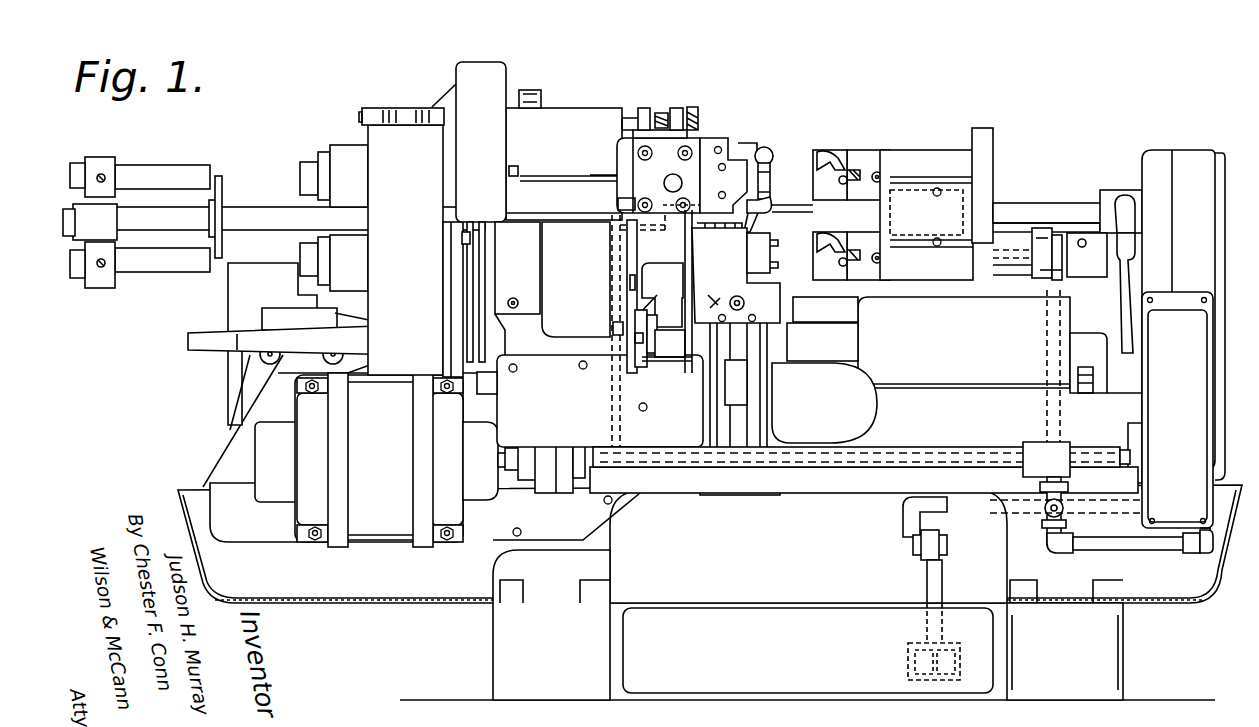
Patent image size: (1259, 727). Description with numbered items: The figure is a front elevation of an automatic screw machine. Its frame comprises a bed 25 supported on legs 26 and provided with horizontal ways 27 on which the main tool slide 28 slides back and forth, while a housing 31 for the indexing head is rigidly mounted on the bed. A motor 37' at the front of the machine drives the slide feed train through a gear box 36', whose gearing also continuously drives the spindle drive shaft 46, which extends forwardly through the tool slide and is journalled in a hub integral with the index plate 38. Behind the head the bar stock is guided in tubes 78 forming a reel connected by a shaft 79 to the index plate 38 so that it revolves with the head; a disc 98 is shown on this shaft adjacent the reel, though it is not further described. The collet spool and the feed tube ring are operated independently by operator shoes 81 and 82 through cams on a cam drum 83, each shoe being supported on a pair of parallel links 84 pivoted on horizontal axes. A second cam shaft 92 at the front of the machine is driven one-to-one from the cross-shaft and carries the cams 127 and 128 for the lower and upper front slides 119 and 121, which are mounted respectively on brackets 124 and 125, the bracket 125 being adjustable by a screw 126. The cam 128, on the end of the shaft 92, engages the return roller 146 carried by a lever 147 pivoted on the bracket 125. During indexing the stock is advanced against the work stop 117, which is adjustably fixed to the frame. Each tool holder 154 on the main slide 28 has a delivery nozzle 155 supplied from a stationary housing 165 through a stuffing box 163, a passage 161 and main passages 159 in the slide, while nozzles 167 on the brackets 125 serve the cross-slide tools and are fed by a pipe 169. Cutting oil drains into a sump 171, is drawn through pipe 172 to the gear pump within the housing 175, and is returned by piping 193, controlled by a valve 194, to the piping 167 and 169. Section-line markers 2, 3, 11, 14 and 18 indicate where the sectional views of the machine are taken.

The section line 2- 2 is at (409, 57).
The section line 3- 3 is at (266, 55).
The section line 11- 11 is at (1198, 343).
The section line 14- 14 is at (814, 87).
The section line 18- 18 is at (672, 55).
The bed 25 is at (828, 495).
The legs 26 is at (600, 560).
The horizontal ways 27 is at (848, 306).
The main tool slide 28 is at (930, 160).
The housing 31 is at (563, 115).
The gear box 36' is at (1147, 301).
The motor 37' is at (397, 473).
The index plate 38 is at (483, 250).
The spindle drive shaft 46 is at (1012, 205).
The tube 78 is at (156, 177).
The shaft 79 is at (250, 211).
The operator shoe 81 is at (401, 292).
The operator shoe 82 is at (312, 318).
The cam drum 83 is at (228, 298).
The parallel links 84 is at (255, 390).
The second cam shaft 92 is at (860, 352).
The collar disc 98 is at (224, 182).
The work stop 117 is at (772, 268).
The lower front cross-slide 119 is at (723, 300).
The upper front cross-slide 121 is at (735, 160).
The bracket 124 is at (765, 366).
The bracket 125 is at (703, 137).
The screw 126 is at (666, 118).
The cam 127 is at (740, 338).
The cam 128 is at (650, 336).
The return roller 146 is at (662, 358).
The lever 147 is at (655, 347).
The tool holder 154 is at (876, 158).
The delivery nozzle 155 is at (828, 152).
The main passages 159 is at (920, 252).
The passage 161 is at (1020, 248).
The stuffing box 163 is at (1062, 230).
The stationary housing 165 is at (1094, 317).
The nozzles 167 is at (767, 148).
The pipe 169 is at (594, 485).
The sump 171 is at (822, 640).
The pipe 172 is at (956, 508).
The housing 175 is at (1177, 410).
The piping 193 is at (1100, 548).
The valve 194 is at (1037, 525).